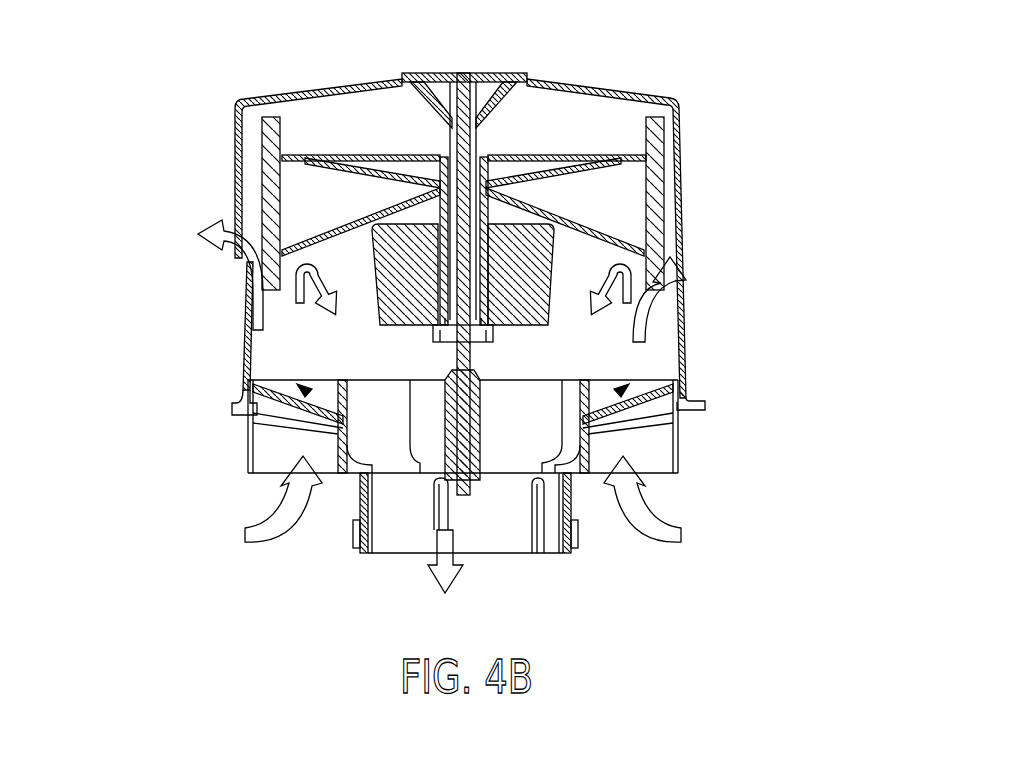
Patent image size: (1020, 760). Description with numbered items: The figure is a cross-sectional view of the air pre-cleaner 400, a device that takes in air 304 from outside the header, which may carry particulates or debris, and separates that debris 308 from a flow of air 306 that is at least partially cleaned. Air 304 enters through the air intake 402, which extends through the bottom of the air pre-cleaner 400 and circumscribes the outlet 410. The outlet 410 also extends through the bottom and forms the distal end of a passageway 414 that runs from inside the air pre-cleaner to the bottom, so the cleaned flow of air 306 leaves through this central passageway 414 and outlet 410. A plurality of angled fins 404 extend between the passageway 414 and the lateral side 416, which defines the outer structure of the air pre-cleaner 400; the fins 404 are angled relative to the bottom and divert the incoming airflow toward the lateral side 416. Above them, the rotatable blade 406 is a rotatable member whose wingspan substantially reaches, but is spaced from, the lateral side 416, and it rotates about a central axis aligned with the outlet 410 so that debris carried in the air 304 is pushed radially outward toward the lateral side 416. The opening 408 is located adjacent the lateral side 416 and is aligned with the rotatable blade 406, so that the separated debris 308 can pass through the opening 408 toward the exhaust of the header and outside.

The air pre-cleaner 400 is at (703, 84).
The air 304 is at (262, 543).
The flow of air 306 is at (283, 233).
The debris 308 is at (226, 245).
The air intake 402 is at (268, 475).
The angled fins 404 is at (292, 408).
The rotatable blade 406 is at (668, 178).
The opening 408 is at (253, 158).
The outlet 410 is at (503, 558).
The passageway 414 is at (360, 507).
The lateral side 416 is at (248, 308).